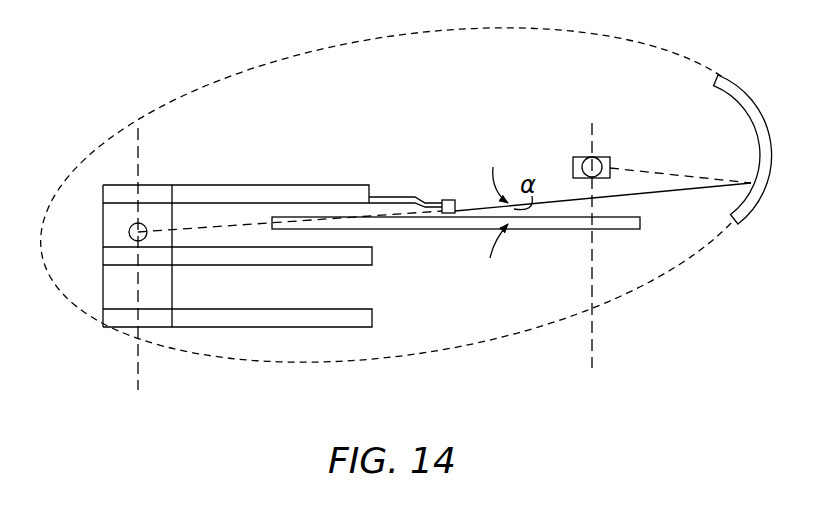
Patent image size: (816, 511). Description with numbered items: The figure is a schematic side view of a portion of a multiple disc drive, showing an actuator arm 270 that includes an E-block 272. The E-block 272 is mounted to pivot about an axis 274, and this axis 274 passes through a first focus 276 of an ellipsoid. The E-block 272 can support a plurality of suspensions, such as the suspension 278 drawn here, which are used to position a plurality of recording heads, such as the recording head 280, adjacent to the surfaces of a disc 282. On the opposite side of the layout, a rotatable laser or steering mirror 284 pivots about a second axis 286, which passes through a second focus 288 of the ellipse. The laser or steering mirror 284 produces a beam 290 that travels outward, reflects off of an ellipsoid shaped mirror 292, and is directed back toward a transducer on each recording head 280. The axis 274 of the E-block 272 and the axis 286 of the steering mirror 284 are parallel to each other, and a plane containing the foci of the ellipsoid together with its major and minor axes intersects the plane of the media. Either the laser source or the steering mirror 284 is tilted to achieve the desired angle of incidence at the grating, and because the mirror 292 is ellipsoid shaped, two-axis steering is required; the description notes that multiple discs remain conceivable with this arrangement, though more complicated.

The actuator arm 270 is at (203, 357).
The E-block 272 is at (275, 318).
The axis 274 is at (137, 372).
The first focus 276 is at (129, 232).
The suspension 278 is at (388, 197).
The recording head 280 is at (448, 200).
The disc 282 is at (415, 229).
The rotatable laser or steering mirror 284 is at (572, 168).
The axis 286 is at (594, 338).
The second focus 288 is at (600, 159).
The beam 290 is at (673, 173).
The ellipsoid shaped mirror 292 is at (738, 98).